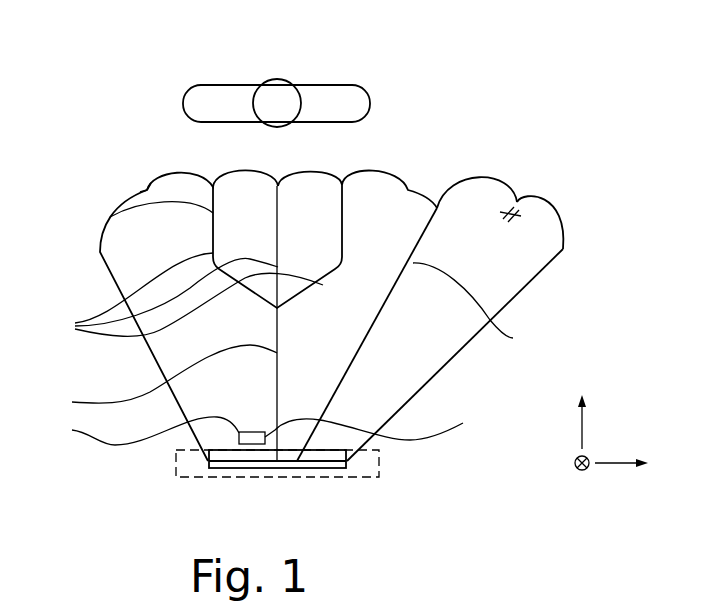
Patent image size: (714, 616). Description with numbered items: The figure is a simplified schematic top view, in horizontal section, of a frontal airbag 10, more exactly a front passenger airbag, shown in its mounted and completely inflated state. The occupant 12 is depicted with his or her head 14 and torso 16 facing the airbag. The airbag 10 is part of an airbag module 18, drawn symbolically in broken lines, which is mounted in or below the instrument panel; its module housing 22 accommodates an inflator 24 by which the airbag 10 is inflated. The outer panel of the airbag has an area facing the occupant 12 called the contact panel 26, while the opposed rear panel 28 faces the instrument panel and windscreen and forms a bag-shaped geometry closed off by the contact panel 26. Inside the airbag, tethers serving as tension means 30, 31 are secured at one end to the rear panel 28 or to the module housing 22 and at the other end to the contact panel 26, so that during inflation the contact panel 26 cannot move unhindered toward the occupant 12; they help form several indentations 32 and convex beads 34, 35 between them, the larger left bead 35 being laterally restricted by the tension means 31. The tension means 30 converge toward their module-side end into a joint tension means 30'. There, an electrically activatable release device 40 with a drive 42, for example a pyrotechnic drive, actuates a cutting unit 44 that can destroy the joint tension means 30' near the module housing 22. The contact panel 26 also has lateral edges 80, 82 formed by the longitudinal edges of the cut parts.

The frontal airbag 10 is at (96, 355).
The occupant 12 is at (211, 74).
The head 14 is at (277, 90).
The torso 16 is at (328, 102).
The airbag module 18 is at (165, 468).
The module housing 22 is at (379, 460).
The inflator 24 is at (209, 450).
The contact panel 26 is at (178, 153).
The rear panel 28 is at (472, 340).
The tension means 30 is at (181, 297).
The joint tension means 30' is at (155, 380).
The tension means 31 is at (513, 338).
The indentations 32 is at (113, 215).
The convex beads 34 is at (167, 185).
The larger bead 35 is at (498, 192).
The release device 40 is at (255, 462).
The drive 42 is at (139, 430).
The cutting unit 44 is at (380, 419).
The lateral edge 80 is at (150, 185).
The lateral edge 82 is at (519, 200).